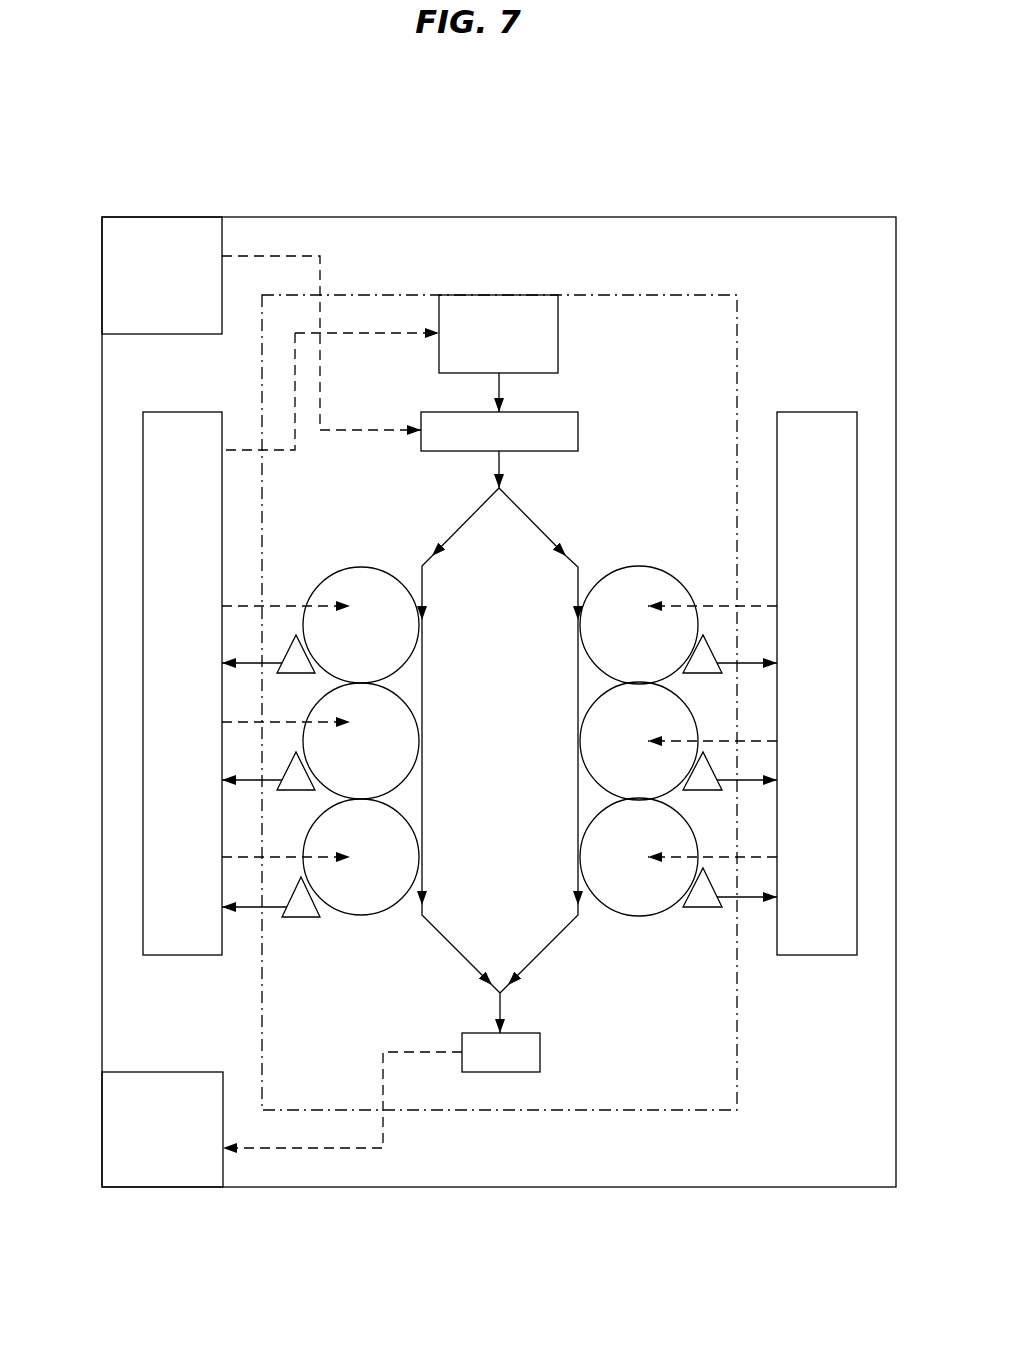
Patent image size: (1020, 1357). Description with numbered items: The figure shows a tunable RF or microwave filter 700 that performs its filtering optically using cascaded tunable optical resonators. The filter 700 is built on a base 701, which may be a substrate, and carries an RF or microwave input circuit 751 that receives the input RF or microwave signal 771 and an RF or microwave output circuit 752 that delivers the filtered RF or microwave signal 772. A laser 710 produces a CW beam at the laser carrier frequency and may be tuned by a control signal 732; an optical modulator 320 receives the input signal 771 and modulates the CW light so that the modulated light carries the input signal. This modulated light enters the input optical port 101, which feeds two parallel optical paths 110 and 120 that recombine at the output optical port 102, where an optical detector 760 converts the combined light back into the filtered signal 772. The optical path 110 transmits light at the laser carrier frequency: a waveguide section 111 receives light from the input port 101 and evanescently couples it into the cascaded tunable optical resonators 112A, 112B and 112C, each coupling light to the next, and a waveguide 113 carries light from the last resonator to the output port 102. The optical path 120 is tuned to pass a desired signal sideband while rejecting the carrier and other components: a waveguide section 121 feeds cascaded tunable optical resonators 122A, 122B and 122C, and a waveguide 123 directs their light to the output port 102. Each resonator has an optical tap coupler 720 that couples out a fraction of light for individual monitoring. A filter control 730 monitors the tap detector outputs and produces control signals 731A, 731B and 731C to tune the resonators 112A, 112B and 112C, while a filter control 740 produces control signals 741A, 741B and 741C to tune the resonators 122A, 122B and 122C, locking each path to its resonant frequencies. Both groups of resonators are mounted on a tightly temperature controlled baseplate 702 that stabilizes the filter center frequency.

The tunable RF or microwave filter 700 is at (398, 137).
The base 701 is at (735, 238).
The temperature controlled baseplate 702 is at (725, 333).
The laser 710 is at (558, 333).
The optical modulator 320 is at (578, 431).
The input optical port 101 is at (505, 488).
The output optical port 102 is at (497, 998).
The optical path 110 is at (340, 545).
The waveguide section 111 is at (460, 527).
The tunable optical resonator 112A is at (332, 657).
The tunable optical resonator 112B is at (331, 773).
The tunable optical resonator 112C is at (331, 890).
The waveguide 113 is at (455, 945).
The optical path 120 is at (663, 547).
The waveguide section 121 is at (545, 525).
The tunable optical resonator 122A is at (608, 655).
The tunable optical resonator 122B is at (609, 733).
The tunable optical resonator 122C is at (599, 890).
The waveguide 123 is at (542, 957).
The optical tap coupler 720 is at (300, 917).
The filter control 730 is at (183, 955).
The control signal 731A is at (286, 588).
The control signal 731B is at (286, 706).
The control signal 731C is at (286, 841).
The control signal 732 is at (296, 344).
The filter control 740 is at (815, 955).
The control signal 741A is at (712, 588).
The control signal 741B is at (712, 724).
The control signal 741C is at (712, 841).
The RF or microwave input circuit 751 is at (123, 273).
The RF or microwave output circuit 752 is at (103, 1128).
The optical detector 760 is at (480, 1072).
The input RF or microwave signal 771 is at (320, 280).
The filtered RF or microwave signal 772 is at (383, 1128).